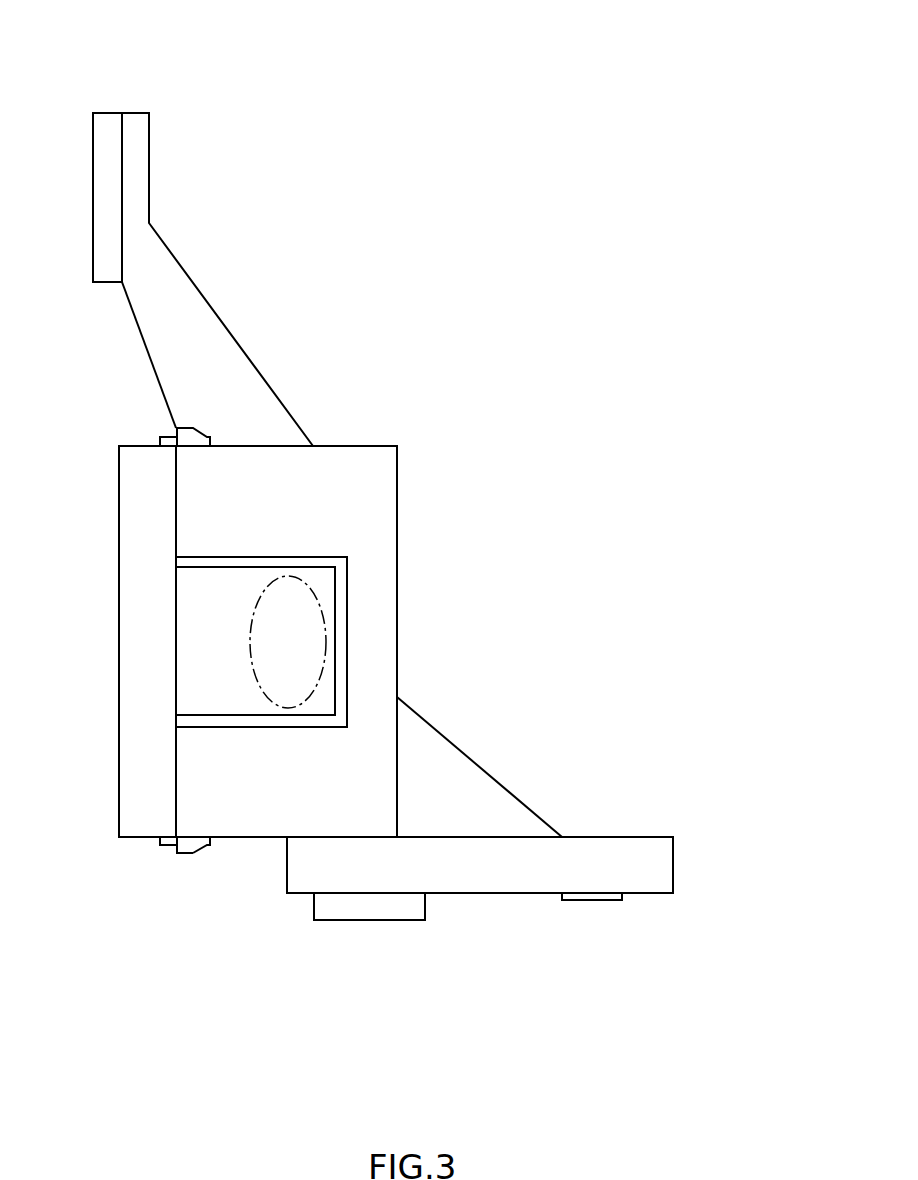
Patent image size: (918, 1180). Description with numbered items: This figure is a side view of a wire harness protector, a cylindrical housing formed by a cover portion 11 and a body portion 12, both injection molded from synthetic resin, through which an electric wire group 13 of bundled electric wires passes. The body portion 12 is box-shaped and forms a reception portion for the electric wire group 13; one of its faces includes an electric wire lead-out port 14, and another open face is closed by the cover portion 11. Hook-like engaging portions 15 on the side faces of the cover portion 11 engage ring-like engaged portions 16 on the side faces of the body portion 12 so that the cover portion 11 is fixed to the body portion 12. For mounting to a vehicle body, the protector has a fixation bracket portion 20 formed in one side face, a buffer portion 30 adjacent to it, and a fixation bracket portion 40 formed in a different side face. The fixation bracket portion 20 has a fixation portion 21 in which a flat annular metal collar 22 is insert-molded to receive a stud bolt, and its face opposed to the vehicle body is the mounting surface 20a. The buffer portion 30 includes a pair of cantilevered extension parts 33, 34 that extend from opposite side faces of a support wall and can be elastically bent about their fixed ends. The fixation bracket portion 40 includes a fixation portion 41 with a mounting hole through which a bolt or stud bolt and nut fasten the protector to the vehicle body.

The cover portion 11 is at (148, 517).
The body portion 12 is at (383, 469).
The electric wire group 13 is at (327, 643).
The electric wire lead-out port 14 is at (347, 590).
The engaging portion 15 is at (207, 848).
The engaged portion 16 is at (187, 855).
The fixation bracket portion 20 is at (496, 946).
The mounting surface 20a is at (502, 893).
The fixation portion 21 is at (675, 865).
The collar 22 is at (590, 900).
The buffer portion 30 is at (323, 970).
The extension part 33 is at (369, 963).
The extension part 34 is at (367, 923).
The fixation bracket portion 40 is at (212, 253).
The fixation portion 41 is at (94, 132).